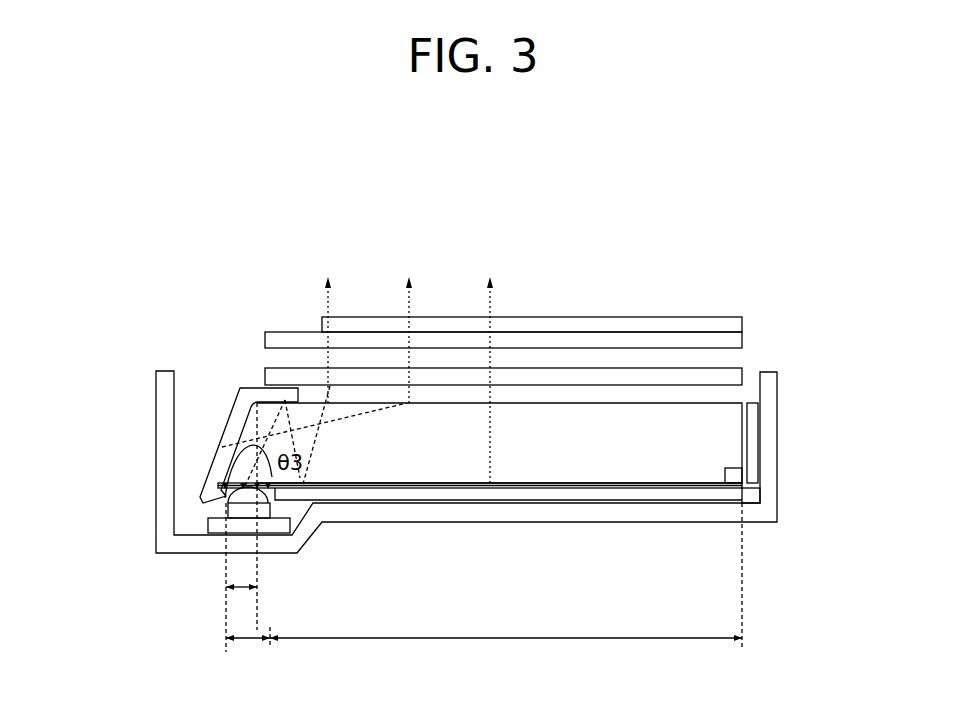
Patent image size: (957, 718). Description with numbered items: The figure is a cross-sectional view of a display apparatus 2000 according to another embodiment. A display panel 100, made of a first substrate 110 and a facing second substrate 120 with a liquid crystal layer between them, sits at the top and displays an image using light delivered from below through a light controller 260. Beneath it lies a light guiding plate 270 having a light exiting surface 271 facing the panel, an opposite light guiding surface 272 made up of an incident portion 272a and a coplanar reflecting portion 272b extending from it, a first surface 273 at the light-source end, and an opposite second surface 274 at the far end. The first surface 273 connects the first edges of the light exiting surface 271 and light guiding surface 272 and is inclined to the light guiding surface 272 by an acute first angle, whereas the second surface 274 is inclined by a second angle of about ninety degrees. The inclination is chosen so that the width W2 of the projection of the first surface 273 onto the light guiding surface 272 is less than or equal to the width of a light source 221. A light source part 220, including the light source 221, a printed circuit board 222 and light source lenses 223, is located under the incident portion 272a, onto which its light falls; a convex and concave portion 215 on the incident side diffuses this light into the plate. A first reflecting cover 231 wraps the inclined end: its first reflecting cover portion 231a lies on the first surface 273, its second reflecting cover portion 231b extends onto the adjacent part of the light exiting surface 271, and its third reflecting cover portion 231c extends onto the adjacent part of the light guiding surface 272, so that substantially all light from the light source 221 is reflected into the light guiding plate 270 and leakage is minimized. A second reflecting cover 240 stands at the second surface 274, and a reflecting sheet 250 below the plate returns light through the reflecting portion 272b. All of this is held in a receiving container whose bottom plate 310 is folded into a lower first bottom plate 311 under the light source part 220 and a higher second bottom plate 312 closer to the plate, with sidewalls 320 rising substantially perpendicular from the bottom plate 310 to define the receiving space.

The display apparatus 2000 is at (497, 222).
The display panel 100 is at (560, 311).
The first substrate 110 is at (533, 326).
The second substrate 120 is at (742, 322).
The light controller 260 is at (742, 377).
The light guiding plate 270 is at (528, 475).
The light exiting surface 271 is at (609, 402).
The light guiding surface 272 is at (535, 486).
The incident portion 272a is at (248, 587).
The reflecting portion 272b is at (506, 587).
The first surface 273 is at (256, 425).
The second surface 274 is at (742, 445).
The second reflecting cover 240 is at (753, 416).
The reflecting sheet 250 is at (753, 500).
The sidewalls 320 is at (772, 470).
The bottom plate 310 is at (418, 575).
The first bottom plate 311 is at (287, 550).
The second bottom plate 312 is at (392, 528).
The first reflecting cover 231 is at (200, 373).
The first reflecting cover portion 231a is at (236, 445).
The second reflecting cover portion 231b is at (288, 391).
The third reflecting cover portion 231c is at (212, 466).
The convex and concave portion 215 is at (203, 498).
The light source part 220 is at (165, 516).
The light source 221 is at (228, 514).
The printed circuit board 222 is at (210, 528).
The light source lens 223 is at (228, 507).
The width of projected plane W2 is at (241, 601).